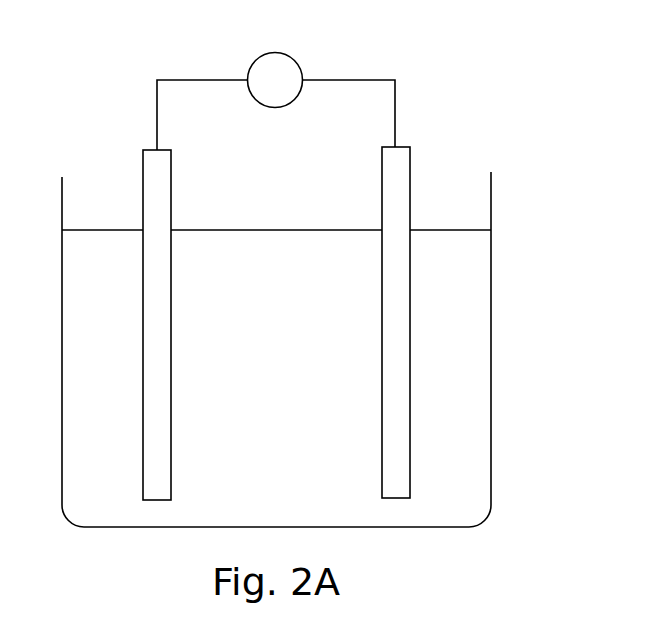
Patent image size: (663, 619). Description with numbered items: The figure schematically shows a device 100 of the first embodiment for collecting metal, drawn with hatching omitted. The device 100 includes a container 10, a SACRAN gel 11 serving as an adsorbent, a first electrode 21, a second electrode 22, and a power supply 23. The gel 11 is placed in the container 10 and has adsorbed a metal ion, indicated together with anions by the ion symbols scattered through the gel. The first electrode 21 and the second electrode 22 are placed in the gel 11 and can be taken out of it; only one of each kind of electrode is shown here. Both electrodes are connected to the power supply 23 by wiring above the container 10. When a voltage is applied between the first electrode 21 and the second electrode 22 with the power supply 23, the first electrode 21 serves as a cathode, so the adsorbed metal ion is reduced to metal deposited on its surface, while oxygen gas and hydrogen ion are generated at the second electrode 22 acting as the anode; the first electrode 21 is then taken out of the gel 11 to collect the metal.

The device 100 is at (80, 81).
The container 10 is at (490, 200).
The SACRAN gel 11 is at (478, 283).
The first electrode 21 is at (143, 163).
The second electrode 22 is at (410, 160).
The power supply 23 is at (296, 60).